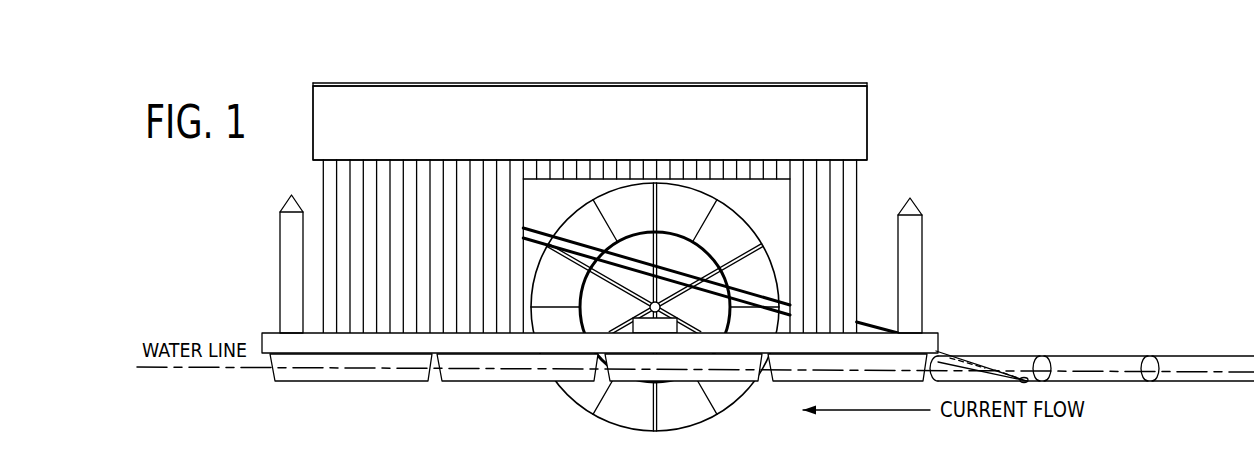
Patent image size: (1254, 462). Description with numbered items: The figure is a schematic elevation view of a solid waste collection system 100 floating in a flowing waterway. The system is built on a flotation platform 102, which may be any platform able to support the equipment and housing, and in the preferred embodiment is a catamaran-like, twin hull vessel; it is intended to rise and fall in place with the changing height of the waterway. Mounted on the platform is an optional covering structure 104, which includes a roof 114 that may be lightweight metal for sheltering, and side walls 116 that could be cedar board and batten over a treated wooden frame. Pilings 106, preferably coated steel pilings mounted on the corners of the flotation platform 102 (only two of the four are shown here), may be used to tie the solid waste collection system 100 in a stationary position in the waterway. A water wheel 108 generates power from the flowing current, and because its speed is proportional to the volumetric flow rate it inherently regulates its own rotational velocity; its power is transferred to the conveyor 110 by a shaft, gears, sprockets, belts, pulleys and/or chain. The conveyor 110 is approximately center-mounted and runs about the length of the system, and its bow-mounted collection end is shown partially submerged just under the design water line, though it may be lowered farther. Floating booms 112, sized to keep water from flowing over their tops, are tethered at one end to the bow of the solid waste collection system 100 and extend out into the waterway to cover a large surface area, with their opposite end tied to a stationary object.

The solid waste collection system 100 is at (888, 73).
The flotation platform 102 is at (262, 333).
The covering structure 104 is at (407, 83).
The pilings 106 is at (280, 293).
The water wheel 108 is at (688, 433).
The conveyor 110 is at (940, 352).
The floating booms 112 is at (1095, 356).
The roof 114 is at (388, 132).
The side walls 116 is at (322, 190).